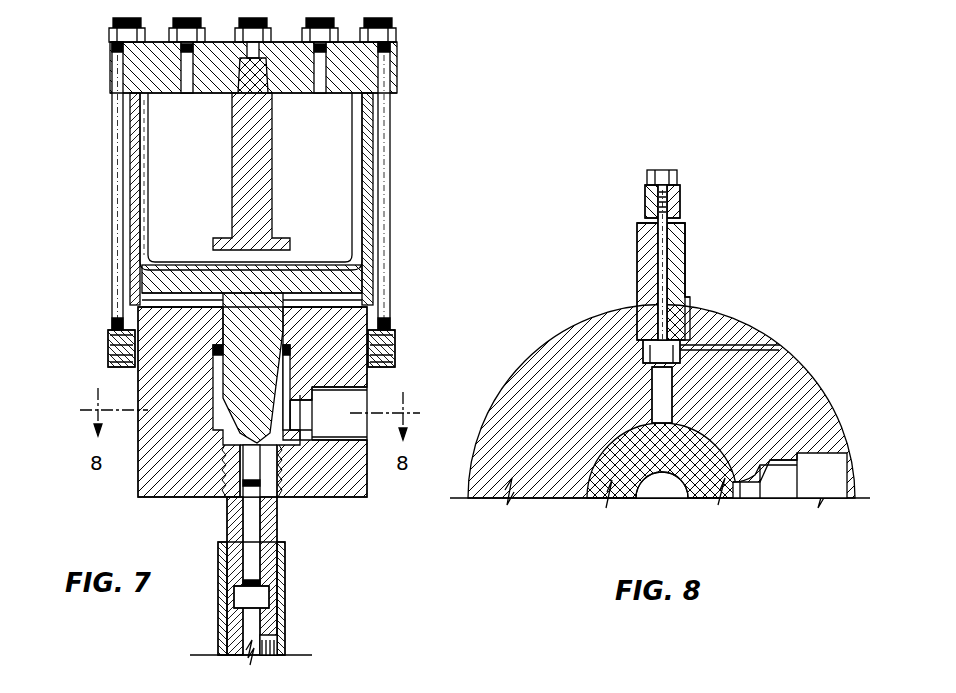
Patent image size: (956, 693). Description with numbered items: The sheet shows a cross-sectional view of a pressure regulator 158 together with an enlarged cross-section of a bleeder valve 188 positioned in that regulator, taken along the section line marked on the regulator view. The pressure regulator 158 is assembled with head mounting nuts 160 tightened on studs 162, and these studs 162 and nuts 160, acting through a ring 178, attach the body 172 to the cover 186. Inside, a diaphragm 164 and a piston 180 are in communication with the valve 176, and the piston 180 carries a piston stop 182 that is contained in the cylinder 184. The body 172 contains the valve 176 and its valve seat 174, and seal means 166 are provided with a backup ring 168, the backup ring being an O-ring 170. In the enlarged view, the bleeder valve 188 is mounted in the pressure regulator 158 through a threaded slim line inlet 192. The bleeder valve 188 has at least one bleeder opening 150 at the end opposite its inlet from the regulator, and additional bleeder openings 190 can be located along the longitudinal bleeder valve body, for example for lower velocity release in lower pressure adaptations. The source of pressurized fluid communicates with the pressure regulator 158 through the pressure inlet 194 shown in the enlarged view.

In FIG. 7, the pressure regulator 158 is at (408, 66).
In FIG. 7, the head mounting nuts 160 is at (120, 32).
In FIG. 7, the studs 162 is at (384, 205).
In FIG. 7, the diaphragm 164 is at (150, 210).
In FIG. 7, the seal means 166 is at (292, 345).
In FIG. 7, the backup ring 168 is at (210, 497).
In FIG. 7, the O-ring 170 is at (215, 445).
In FIG. 7, the body 172 is at (330, 485).
In FIG. 7, the valve seat 174 is at (270, 515).
In FIG. 7, the valve 176 is at (265, 330).
In FIG. 7, the ring 178 is at (118, 345).
In FIG. 7, the piston 180 is at (156, 278).
In FIG. 7, the piston stop 182 is at (258, 218).
In FIG. 7, the cylinder 184 is at (138, 150).
In FIG. 7, the cover 186 is at (372, 80).
In FIG. 8, the bleeder valve 188 is at (694, 190).
In FIG. 8, the bleeder opening 150 is at (682, 218).
In FIG. 8, the additional bleeder openings 190 is at (640, 258).
In FIG. 8, the threaded slim line inlet 192 is at (688, 330).
In FIG. 8, the pressure inlet 194 is at (835, 485).